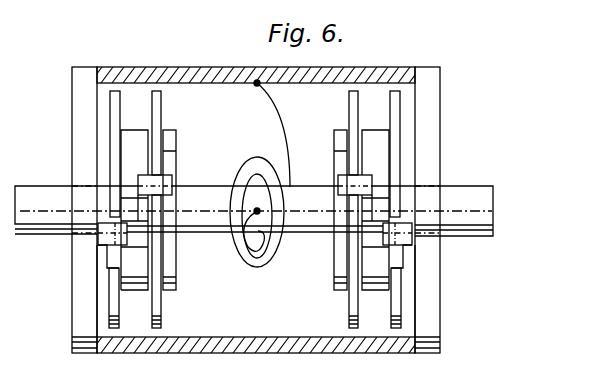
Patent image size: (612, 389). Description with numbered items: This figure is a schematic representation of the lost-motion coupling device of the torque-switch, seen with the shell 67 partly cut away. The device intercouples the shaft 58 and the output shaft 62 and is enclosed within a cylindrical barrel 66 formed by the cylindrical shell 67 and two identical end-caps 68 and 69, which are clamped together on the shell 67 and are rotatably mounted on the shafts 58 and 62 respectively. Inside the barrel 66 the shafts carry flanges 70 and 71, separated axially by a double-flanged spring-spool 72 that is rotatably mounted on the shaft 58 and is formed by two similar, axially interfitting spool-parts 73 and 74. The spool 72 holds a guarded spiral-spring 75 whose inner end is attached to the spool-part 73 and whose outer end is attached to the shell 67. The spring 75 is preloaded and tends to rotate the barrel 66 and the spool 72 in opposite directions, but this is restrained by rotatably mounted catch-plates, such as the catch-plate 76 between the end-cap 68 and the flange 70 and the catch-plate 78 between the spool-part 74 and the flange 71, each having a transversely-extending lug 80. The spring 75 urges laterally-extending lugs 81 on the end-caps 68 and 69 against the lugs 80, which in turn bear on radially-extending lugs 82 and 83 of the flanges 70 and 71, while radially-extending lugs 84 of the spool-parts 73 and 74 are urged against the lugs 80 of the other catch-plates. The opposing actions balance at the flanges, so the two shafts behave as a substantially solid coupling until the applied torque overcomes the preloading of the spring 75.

The shaft 58 is at (38, 194).
The output shaft 62 is at (496, 190).
The cylindrical barrel 66 is at (188, 62).
The cylindrical shell 67 is at (391, 67).
The end-cap 68 is at (86, 95).
The end-cap 69 is at (429, 102).
The flange 70 is at (133, 292).
The flange 71 is at (377, 295).
The double-flanged spring-spool 72 is at (317, 234).
The spool-part 73 is at (173, 290).
The spool-part 74 is at (346, 293).
The spiral-spring 75 is at (284, 128).
The catch-plate 76 is at (121, 110).
The catch-plate 78 is at (353, 102).
The transversely-extending lug 80 is at (159, 186).
The laterally-extending lug 81 is at (101, 258).
The radially-extending lug 82 is at (138, 212).
The radially-extending lug 83 is at (377, 208).
The radially-extending lug 84 is at (169, 162).